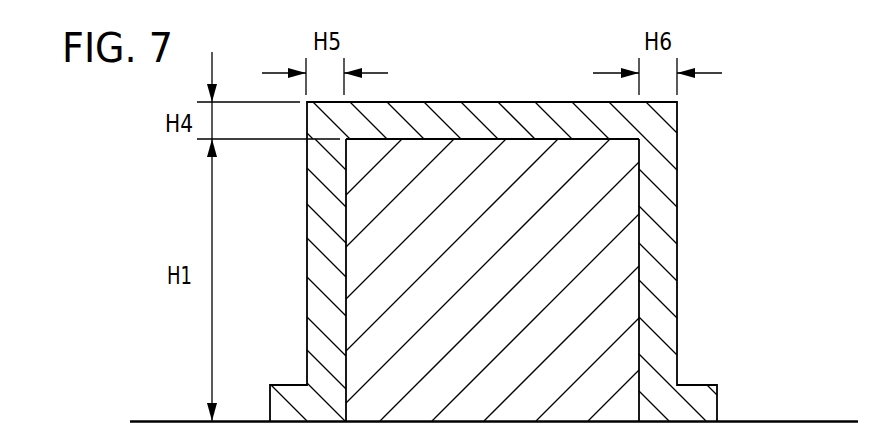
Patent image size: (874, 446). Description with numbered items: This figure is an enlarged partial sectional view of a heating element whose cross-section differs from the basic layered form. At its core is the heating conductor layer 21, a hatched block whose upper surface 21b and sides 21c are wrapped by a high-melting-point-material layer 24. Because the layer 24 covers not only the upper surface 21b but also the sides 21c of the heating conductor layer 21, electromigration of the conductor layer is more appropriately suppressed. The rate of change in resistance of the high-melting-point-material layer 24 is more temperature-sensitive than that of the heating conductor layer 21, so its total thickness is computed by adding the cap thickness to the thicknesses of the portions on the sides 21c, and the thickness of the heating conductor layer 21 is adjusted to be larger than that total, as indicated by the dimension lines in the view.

The heating conductor layer 21 is at (618, 298).
The upper surface 21b is at (542, 140).
The sides 21c is at (343, 272).
The high-melting-point-material layer 24 is at (662, 123).